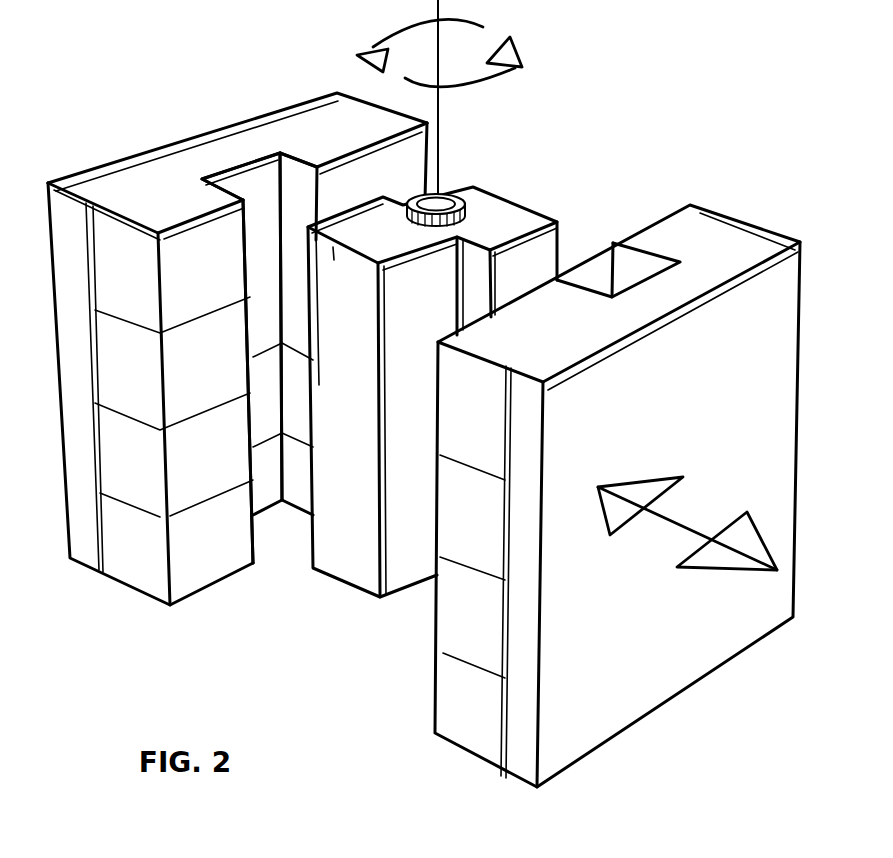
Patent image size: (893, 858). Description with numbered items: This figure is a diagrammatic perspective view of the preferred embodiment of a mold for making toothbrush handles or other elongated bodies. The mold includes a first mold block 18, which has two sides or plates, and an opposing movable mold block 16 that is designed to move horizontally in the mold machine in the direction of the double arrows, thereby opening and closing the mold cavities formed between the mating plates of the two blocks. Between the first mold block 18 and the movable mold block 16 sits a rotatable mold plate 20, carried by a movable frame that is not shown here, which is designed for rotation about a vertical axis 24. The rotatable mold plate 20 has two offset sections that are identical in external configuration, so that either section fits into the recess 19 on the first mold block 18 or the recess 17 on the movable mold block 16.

The movable mold block 16 is at (668, 232).
The recess 17 is at (632, 270).
The first mold block 18 is at (153, 203).
The recess 19 is at (250, 180).
The rotatable mold plate 20 is at (495, 207).
The vertical axis 24 is at (441, 195).